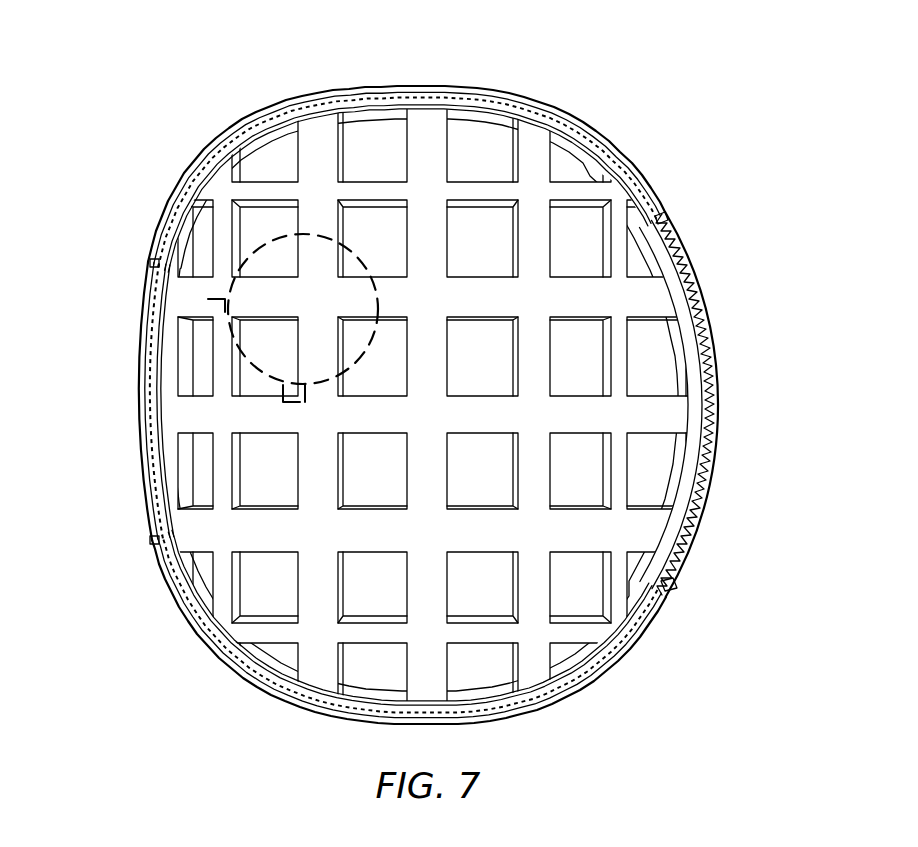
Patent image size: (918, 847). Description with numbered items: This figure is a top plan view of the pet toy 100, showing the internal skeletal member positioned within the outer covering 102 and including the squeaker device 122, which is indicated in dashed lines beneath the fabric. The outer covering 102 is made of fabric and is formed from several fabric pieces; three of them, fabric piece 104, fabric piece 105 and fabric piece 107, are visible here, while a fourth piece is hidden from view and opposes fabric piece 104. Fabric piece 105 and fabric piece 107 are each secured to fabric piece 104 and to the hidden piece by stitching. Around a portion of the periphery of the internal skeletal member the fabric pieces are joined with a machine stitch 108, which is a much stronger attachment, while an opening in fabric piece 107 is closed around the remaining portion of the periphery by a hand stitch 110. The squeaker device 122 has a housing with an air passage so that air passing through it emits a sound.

The pet toy 100 is at (409, 389).
The outer covering 102 is at (660, 187).
The fabric piece 104 is at (298, 103).
The fabric piece 105 is at (143, 372).
The fabric piece 107 is at (676, 590).
The machine stitch 108 is at (538, 116).
The hand stitch 110 is at (705, 456).
The squeaker device 122 is at (218, 300).